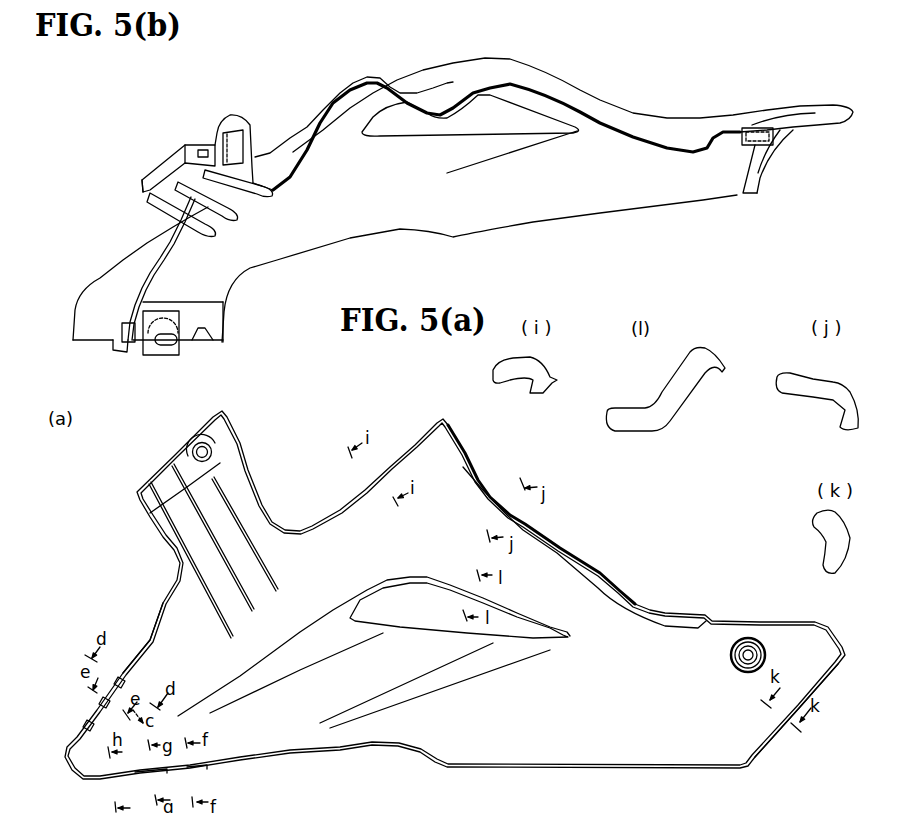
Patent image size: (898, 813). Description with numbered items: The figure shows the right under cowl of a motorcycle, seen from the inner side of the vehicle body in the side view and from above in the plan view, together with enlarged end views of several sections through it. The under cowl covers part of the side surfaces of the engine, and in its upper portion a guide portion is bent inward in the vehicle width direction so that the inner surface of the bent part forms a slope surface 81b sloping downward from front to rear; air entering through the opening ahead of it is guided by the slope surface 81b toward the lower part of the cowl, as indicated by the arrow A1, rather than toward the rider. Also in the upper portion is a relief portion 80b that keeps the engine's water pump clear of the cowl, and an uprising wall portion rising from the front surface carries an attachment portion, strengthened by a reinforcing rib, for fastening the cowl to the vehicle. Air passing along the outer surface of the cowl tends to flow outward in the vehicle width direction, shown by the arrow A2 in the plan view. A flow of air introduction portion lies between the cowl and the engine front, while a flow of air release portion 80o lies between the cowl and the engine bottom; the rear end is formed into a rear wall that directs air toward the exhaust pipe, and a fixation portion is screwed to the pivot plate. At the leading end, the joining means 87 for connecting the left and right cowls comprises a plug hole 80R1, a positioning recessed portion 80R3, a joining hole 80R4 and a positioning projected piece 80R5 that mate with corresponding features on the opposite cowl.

The relief portion 80b is at (293, 473).
The flow of air release portion 80o is at (622, 237).
The plug hole 80R1 is at (123, 327).
The positioning recessed portion 80R3 is at (213, 338).
The joining hole 80R4 is at (166, 346).
The positioning projected piece 80R5 is at (113, 346).
The slope surface 81b is at (584, 547).
The joining means 87 is at (69, 705).
The arrow A1 is at (590, 600).
The arrow A2 is at (328, 61).